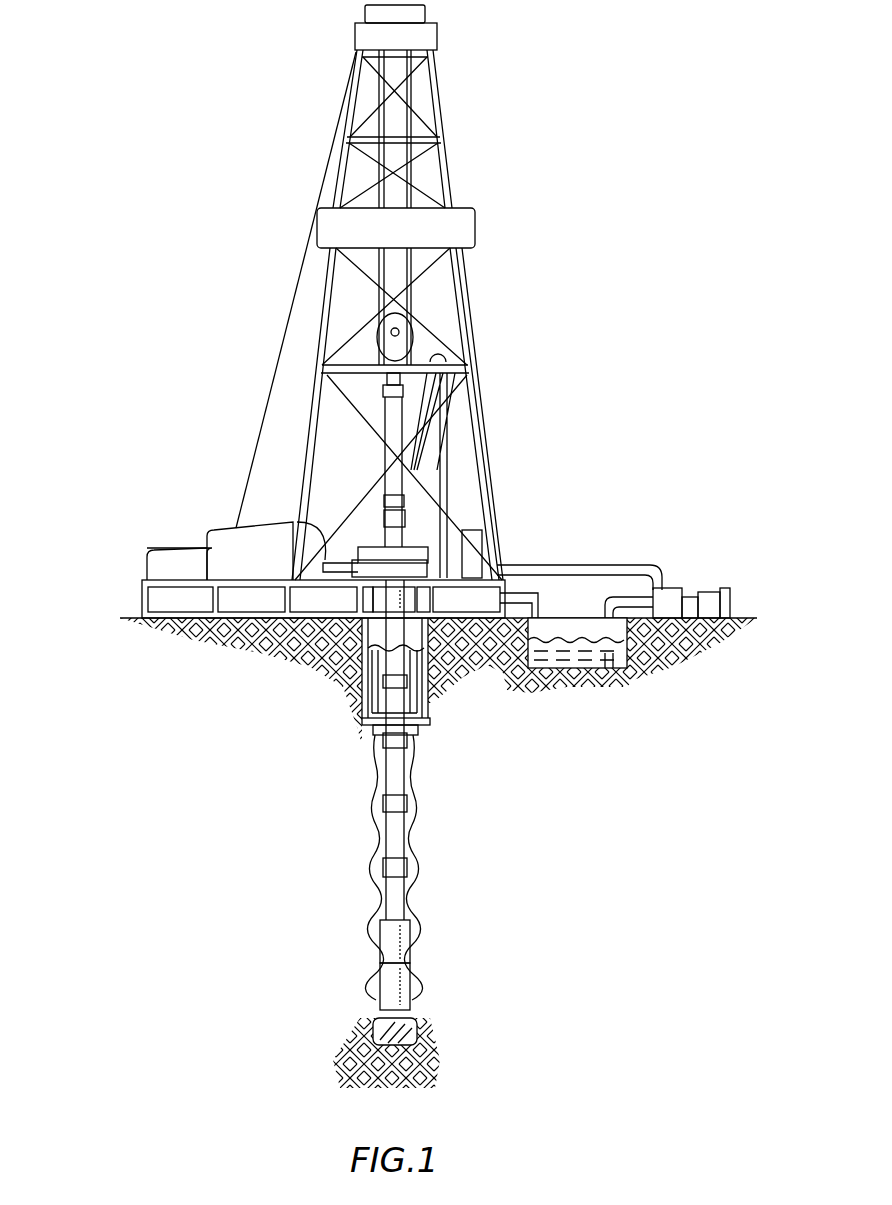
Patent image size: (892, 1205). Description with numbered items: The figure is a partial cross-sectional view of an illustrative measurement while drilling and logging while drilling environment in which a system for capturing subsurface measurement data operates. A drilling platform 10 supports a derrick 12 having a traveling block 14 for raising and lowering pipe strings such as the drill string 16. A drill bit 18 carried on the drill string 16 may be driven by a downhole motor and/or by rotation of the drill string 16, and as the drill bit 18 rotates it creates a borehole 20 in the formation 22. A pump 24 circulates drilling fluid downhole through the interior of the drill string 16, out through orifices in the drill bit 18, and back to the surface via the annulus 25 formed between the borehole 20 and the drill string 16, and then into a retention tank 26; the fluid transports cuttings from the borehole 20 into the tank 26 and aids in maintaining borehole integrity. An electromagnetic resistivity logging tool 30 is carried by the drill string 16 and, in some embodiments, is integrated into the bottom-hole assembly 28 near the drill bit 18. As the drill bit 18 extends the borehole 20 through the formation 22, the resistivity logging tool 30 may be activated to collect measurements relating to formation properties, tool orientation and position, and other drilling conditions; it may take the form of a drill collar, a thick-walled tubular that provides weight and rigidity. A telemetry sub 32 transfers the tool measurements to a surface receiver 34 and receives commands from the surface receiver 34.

The drilling platform 10 is at (142, 603).
The derrick 12 is at (449, 126).
The traveling block 14 is at (427, 340).
The drill string 16 is at (418, 765).
The drill bit 18 is at (417, 1020).
The borehole 20 is at (374, 800).
The formation 22 is at (575, 565).
The pump 24 is at (667, 590).
The annulus 25 is at (372, 785).
The retention tank 26 is at (563, 645).
The bottom-hole assembly 28 is at (371, 981).
The electromagnetic resistivity logging tool 30 is at (378, 985).
The telemetry sub 32 is at (418, 938).
The surface receiver 34 is at (403, 500).